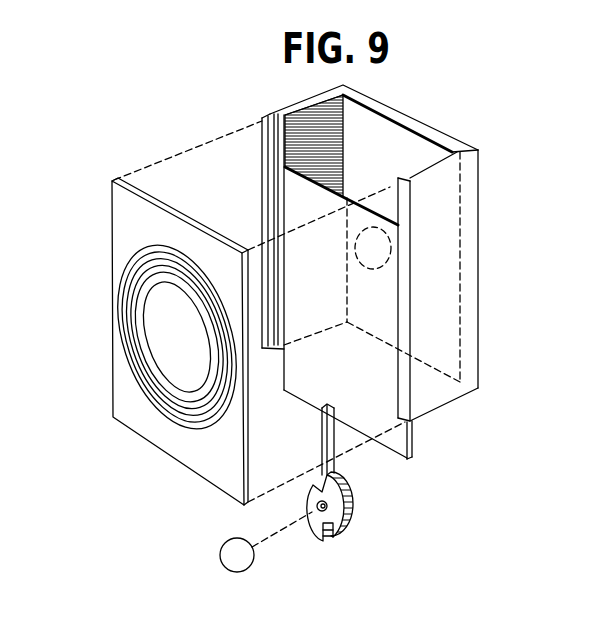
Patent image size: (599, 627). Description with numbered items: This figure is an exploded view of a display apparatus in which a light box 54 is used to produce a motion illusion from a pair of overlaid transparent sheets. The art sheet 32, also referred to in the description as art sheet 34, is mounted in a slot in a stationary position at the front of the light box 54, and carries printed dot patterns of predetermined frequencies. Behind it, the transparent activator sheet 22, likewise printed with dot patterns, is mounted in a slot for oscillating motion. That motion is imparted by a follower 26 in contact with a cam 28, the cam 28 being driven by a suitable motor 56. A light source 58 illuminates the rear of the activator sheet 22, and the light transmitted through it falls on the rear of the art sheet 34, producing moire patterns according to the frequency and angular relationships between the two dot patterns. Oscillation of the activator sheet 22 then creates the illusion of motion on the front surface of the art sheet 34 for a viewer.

The activator sheet 22 is at (383, 311).
The follower 26 is at (322, 437).
The cam 28 is at (354, 512).
The art sheet 32 is at (112, 277).
The art sheet 34 is at (121, 327).
The light box 54 is at (474, 275).
The motor 56 is at (249, 568).
The light source 58 is at (354, 249).